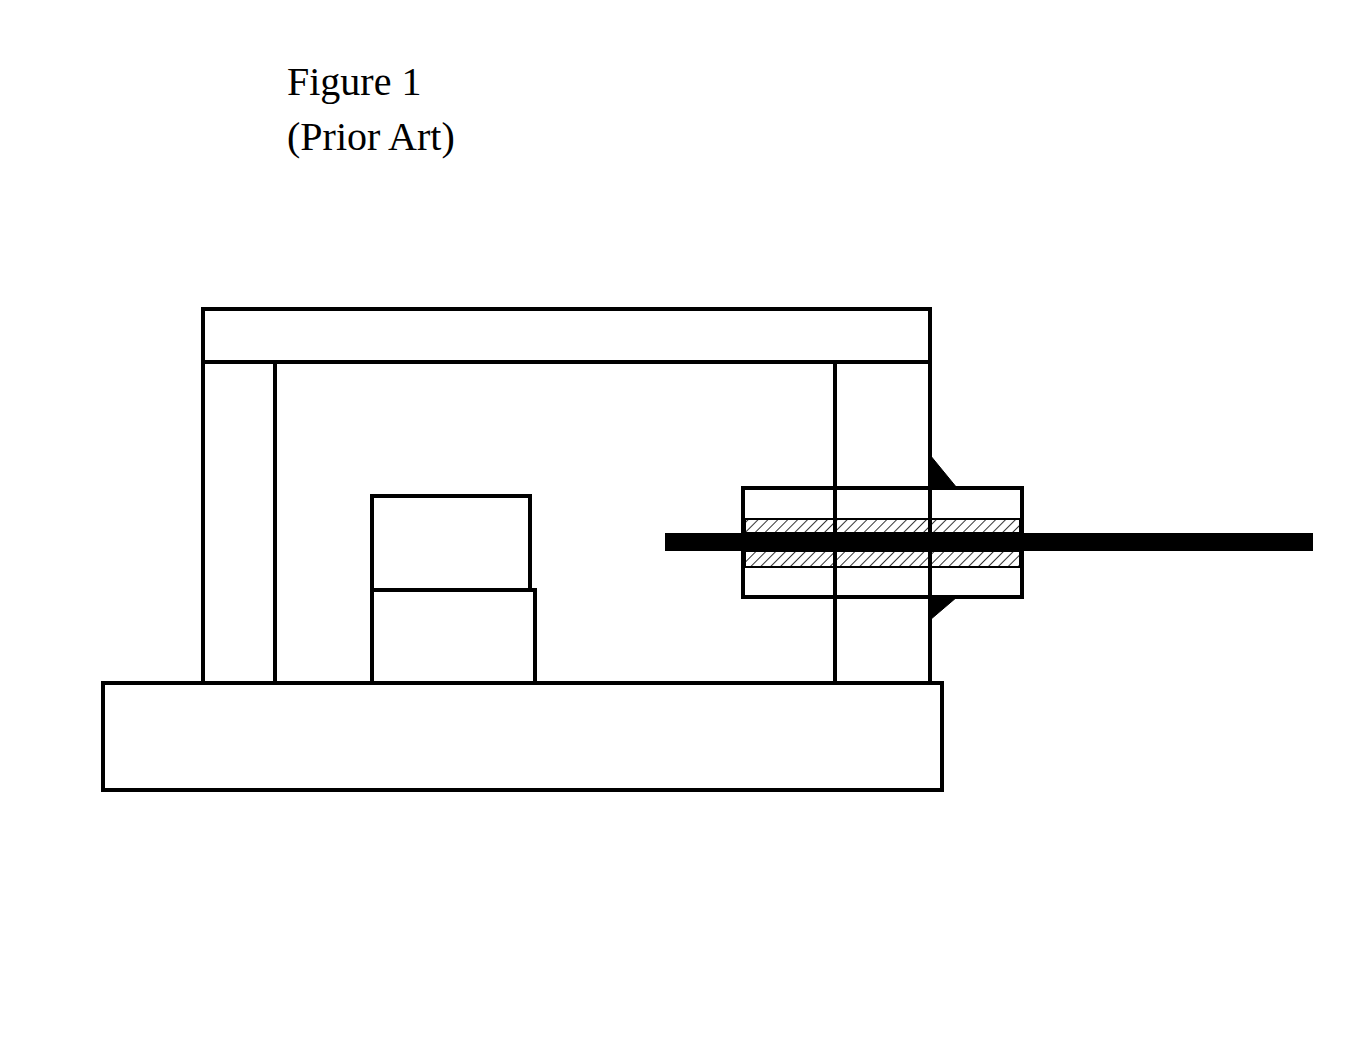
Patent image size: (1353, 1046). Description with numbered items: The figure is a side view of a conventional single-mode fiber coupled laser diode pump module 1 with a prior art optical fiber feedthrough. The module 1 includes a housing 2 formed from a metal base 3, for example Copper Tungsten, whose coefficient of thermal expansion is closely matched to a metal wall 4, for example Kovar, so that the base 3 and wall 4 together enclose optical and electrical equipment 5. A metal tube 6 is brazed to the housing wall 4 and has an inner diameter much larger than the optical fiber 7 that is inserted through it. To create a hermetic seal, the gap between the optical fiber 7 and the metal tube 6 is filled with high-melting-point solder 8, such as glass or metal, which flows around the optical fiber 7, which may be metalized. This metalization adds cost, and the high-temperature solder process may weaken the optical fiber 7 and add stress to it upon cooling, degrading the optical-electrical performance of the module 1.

The single-mode fiber coupled laser diode pump module 1 is at (699, 256).
The housing 2 is at (203, 405).
The base 3 is at (522, 736).
The metal wall 4 is at (239, 522).
The optical and electrical equipment 5 is at (453, 589).
The metal tube 6 is at (988, 503).
The optical fiber 7 is at (1248, 532).
The high-melting-point solder 8 is at (1022, 565).